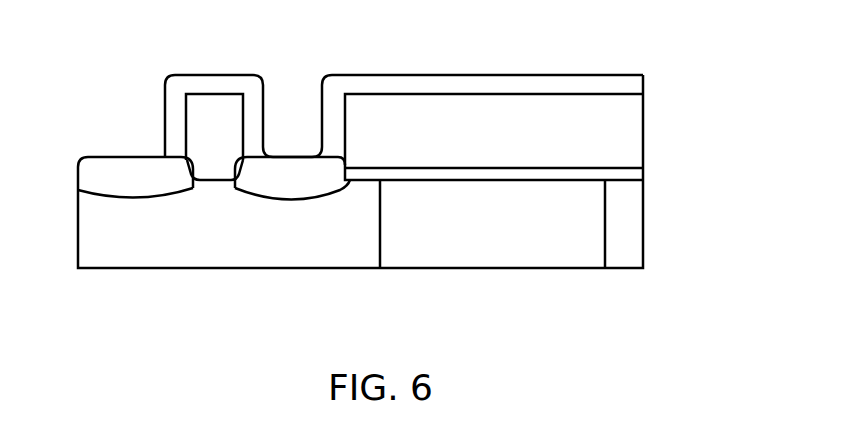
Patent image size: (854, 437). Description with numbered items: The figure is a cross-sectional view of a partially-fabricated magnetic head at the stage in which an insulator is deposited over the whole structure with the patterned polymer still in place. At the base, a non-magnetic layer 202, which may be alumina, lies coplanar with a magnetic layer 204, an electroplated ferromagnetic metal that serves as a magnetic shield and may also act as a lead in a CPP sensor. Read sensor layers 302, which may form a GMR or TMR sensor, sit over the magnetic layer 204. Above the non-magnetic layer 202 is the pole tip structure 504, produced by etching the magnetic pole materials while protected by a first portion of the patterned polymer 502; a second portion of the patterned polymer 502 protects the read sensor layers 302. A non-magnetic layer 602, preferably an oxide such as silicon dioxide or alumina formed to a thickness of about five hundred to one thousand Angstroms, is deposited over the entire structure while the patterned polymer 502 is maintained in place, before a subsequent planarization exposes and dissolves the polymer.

The non-magnetic layer 202 is at (228, 268).
The magnetic layer 204 is at (502, 268).
The read sensor layers 302 is at (643, 168).
The patterned polymer 502 is at (218, 103).
The pole tip structure 504 is at (202, 180).
The non-magnetic layer 602 is at (198, 73).